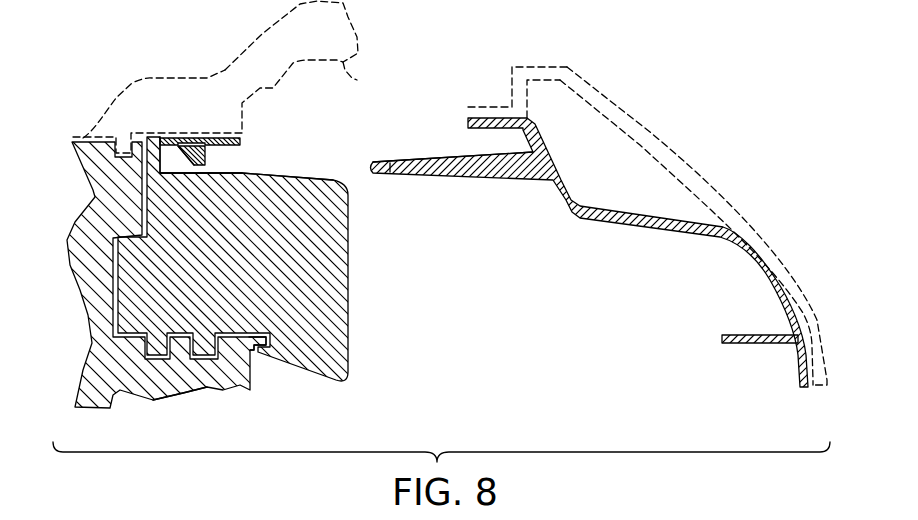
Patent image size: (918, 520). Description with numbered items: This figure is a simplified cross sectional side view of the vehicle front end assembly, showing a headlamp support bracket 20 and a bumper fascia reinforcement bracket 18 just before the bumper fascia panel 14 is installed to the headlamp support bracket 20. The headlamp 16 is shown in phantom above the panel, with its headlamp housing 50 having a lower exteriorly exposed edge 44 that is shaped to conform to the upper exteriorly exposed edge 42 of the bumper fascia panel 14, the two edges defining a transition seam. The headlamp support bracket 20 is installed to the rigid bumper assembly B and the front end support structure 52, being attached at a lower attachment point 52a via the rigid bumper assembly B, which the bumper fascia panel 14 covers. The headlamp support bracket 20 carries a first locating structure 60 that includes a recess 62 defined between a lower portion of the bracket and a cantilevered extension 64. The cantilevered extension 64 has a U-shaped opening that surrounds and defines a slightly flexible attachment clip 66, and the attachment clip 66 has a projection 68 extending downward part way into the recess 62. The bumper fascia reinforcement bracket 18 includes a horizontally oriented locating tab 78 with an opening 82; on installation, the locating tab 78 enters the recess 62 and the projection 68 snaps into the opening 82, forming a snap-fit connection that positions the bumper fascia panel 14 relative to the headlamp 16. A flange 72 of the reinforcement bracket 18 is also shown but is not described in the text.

The vehicle bumper fascia panel 14 is at (653, 137).
The headlamp 16 is at (330, 32).
The bumper fascia reinforcement bracket 18 is at (650, 213).
The headlamp support bracket 20 is at (320, 294).
The upper exteriorly exposed edge 42 is at (567, 67).
The lower exteriorly exposed edge 44 is at (350, 78).
The headlamp housing 50 is at (148, 107).
The front end support structure 52 is at (93, 273).
The lower attachment point 52a is at (258, 352).
The first locating structure 60 is at (340, 156).
The recess 62 is at (242, 173).
The cantilevered extension 64 is at (240, 140).
The attachment clip 66 is at (203, 147).
The projection 68 is at (200, 163).
The lower flange 72 is at (740, 343).
The locating tab 78 is at (433, 167).
The opening 82 is at (423, 163).
The rigid bumper assembly B is at (175, 378).